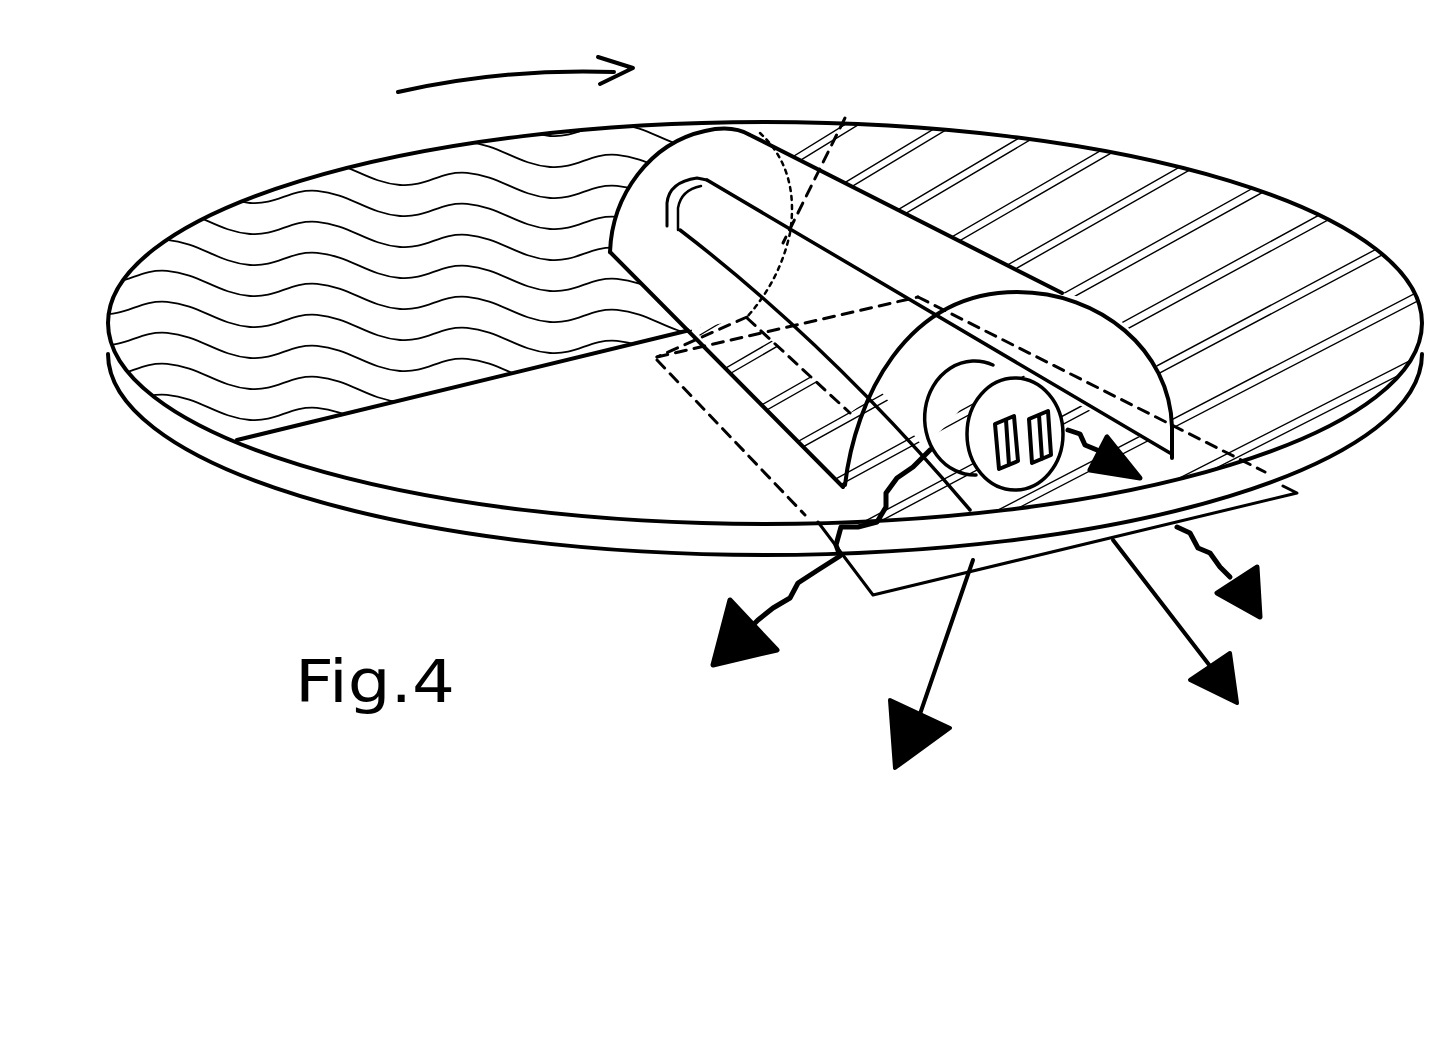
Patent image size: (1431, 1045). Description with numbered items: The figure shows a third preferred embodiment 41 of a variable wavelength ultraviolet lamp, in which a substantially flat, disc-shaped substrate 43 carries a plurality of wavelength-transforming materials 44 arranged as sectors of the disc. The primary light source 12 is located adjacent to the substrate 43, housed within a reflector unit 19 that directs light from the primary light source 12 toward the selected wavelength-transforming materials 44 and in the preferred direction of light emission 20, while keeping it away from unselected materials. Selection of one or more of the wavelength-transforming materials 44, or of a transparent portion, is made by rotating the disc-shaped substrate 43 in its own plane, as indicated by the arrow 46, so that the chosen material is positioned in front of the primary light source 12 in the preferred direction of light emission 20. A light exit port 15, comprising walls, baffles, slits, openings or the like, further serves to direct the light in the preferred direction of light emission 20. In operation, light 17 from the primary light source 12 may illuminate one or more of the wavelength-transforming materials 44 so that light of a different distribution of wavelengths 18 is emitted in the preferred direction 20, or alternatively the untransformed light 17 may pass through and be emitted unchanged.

The primary light source 12 is at (918, 387).
The light exit port 15 is at (873, 567).
The light 17 is at (1187, 358).
The light of a different distribution of wavelengths 18 is at (1240, 597).
The reflector unit 19 is at (725, 162).
The preferred direction of light emission 20 is at (1073, 682).
The third preferred embodiment 41 is at (400, 763).
The substrate 43 is at (532, 527).
The wavelength-transforming materials 44 is at (300, 315).
The arrow 46 is at (515, 60).